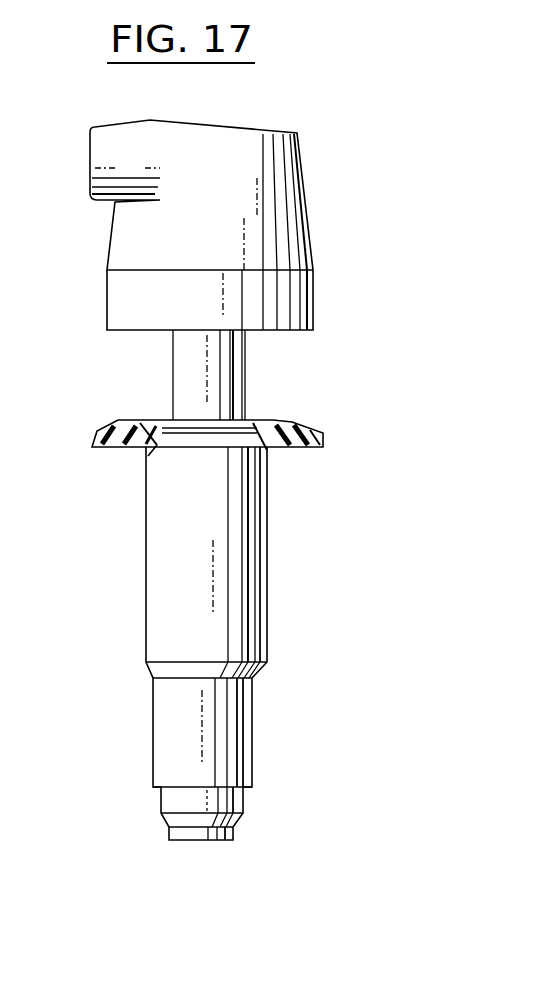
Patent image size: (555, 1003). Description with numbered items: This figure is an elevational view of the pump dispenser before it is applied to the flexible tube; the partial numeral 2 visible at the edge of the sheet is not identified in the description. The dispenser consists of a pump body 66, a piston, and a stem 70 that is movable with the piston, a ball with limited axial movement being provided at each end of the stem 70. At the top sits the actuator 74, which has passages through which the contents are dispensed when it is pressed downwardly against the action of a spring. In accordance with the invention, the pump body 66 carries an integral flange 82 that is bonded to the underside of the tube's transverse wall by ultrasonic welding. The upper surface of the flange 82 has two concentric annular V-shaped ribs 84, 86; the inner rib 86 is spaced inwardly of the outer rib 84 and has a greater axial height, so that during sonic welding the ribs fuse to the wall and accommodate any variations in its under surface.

The fastener assembly 2 is at (9, 125).
The actuator 74 is at (263, 198).
The stem 70 is at (178, 368).
The flange 82 is at (93, 430).
The annular V-shaped rib 84 is at (298, 422).
The annular V-shaped rib 86 is at (140, 420).
The pump body 66 is at (247, 583).